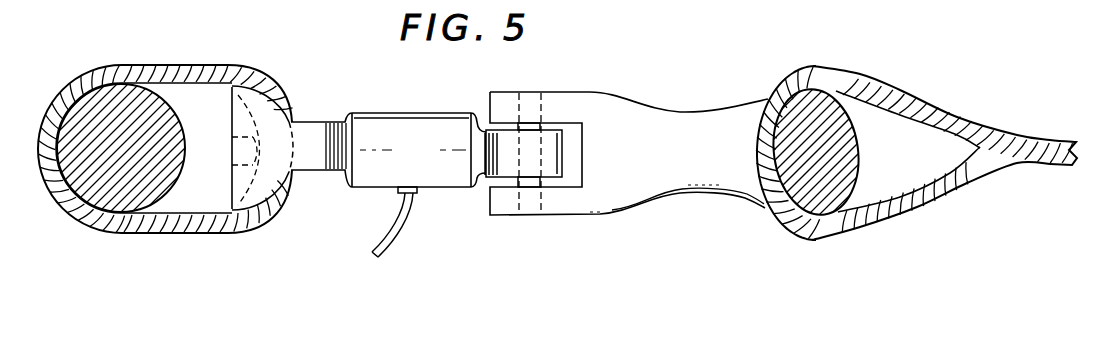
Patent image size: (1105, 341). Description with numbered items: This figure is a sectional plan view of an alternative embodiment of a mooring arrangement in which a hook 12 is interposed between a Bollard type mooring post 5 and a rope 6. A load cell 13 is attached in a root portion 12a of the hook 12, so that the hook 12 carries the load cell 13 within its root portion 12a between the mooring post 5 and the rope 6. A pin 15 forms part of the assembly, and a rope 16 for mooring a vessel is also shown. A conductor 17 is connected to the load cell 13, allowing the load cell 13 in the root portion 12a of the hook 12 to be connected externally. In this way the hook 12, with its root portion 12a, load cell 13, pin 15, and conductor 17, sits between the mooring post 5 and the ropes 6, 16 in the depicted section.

The Bollard type mooring post 5 is at (97, 198).
The rope 6 is at (926, 112).
The hook 12 is at (668, 107).
The root portion 12a is at (393, 125).
The load cell 13 is at (420, 190).
The pin 15 is at (528, 182).
The rope for mooring a vessel 16 is at (215, 222).
The conductor 17 is at (382, 253).